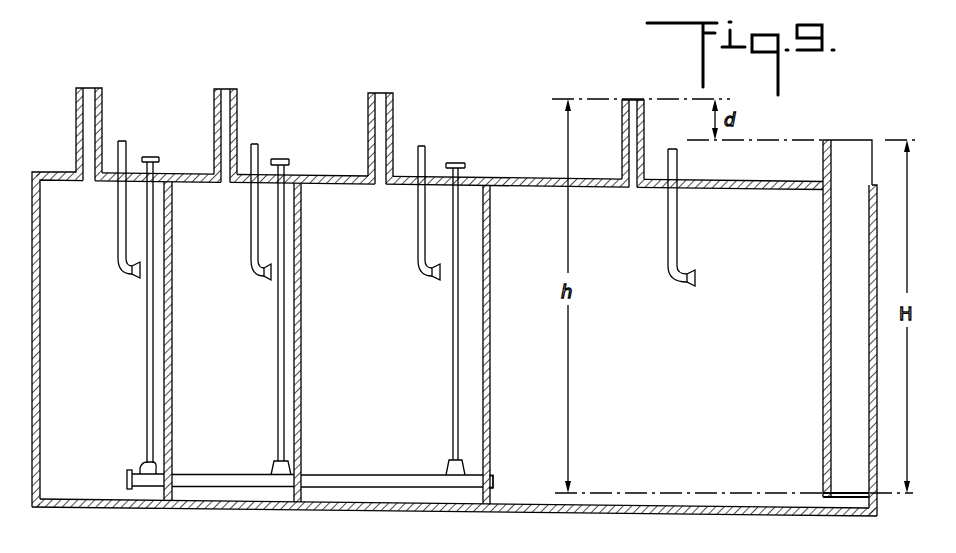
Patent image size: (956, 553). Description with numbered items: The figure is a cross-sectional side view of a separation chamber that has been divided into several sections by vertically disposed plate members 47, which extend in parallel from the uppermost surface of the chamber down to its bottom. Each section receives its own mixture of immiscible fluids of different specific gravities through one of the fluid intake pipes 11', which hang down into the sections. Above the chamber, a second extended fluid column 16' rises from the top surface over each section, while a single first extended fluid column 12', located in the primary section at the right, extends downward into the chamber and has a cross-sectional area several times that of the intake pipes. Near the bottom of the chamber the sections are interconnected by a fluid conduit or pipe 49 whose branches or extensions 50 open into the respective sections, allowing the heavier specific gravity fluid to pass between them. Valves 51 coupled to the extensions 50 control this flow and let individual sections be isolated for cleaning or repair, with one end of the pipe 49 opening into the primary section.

The second extended fluid columns 16' is at (360, 132).
The fluid intake pipes 11' is at (404, 213).
The first extended fluid column 12' is at (817, 318).
The plate members 47 is at (173, 238).
The fluid conduit or pipe 49 is at (368, 455).
The branches or extensions 50 is at (495, 477).
The valves 51 is at (145, 466).